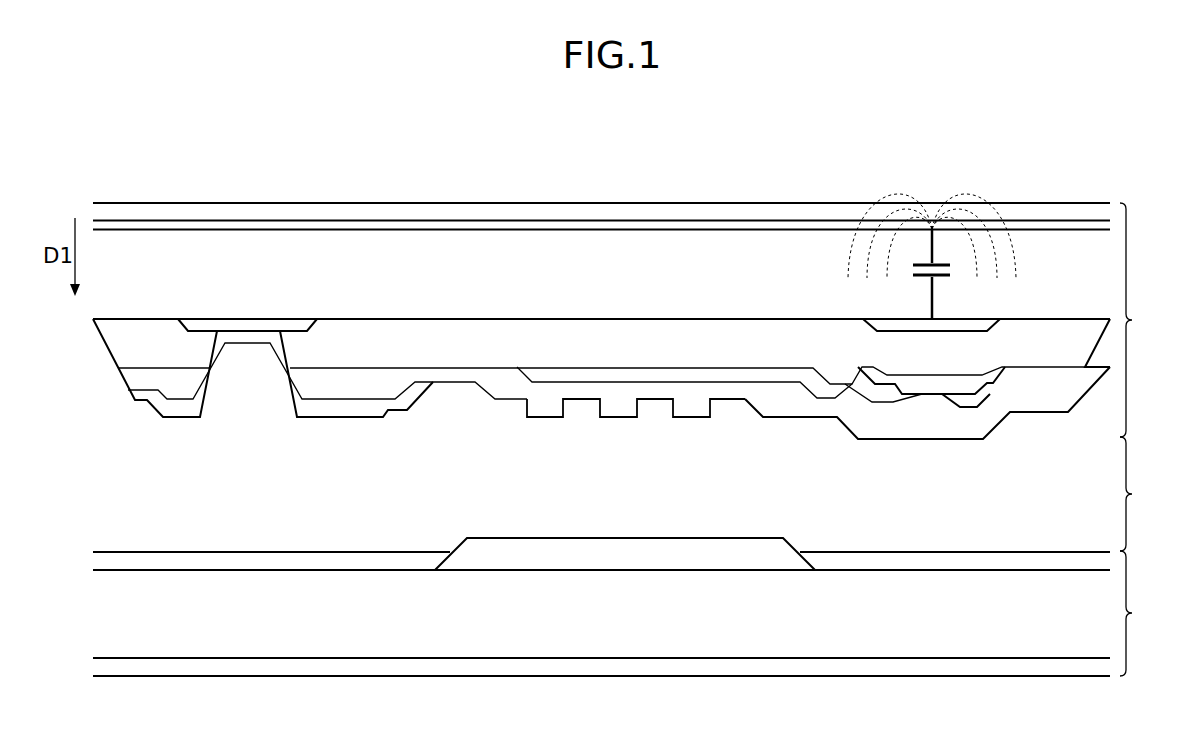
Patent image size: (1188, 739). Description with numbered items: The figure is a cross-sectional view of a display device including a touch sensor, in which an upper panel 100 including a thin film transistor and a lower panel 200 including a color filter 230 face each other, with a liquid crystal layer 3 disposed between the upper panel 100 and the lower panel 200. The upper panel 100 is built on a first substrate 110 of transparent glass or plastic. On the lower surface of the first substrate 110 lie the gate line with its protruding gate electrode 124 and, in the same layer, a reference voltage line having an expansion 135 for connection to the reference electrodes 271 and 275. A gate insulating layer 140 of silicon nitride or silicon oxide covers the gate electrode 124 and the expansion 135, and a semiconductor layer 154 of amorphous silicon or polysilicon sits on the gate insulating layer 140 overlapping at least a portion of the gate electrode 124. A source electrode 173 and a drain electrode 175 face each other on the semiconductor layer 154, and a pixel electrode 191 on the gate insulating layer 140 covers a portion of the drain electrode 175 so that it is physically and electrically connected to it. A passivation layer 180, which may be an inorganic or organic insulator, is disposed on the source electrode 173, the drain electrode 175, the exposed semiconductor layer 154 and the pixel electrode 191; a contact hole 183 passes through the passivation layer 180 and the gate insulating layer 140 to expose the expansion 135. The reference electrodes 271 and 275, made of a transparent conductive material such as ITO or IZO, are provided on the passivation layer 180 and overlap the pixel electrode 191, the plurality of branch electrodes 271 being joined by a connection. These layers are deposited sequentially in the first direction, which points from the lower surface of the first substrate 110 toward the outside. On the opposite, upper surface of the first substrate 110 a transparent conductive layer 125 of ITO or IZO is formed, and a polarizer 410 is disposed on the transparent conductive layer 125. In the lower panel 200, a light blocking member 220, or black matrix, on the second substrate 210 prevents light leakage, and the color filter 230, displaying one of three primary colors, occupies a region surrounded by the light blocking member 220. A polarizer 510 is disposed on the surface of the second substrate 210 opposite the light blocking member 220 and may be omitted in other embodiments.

The upper panel 100 is at (1144, 320).
The lower panel 200 is at (1144, 613).
The liquid crystal layer 3 is at (1134, 494).
The first substrate 110 is at (328, 255).
The transparent conductive layer 125 is at (578, 228).
The polarizer 410 is at (489, 212).
The expansion 135 is at (242, 325).
The gate electrode 124 is at (967, 328).
The gate insulating layer 140 is at (399, 338).
The semiconductor layer 154 is at (932, 385).
The source electrode 173 is at (967, 400).
The drain electrode 175 is at (898, 402).
The passivation layer 180 is at (783, 405).
The contact hole 183 is at (283, 352).
The pixel electrode 191 is at (655, 372).
The branch electrodes 271 is at (547, 406).
The reference electrode 275 is at (340, 407).
The second substrate 210 is at (983, 630).
The light blocking member 220 is at (868, 560).
The color filter 230 is at (595, 558).
The polarizer 510 is at (481, 665).